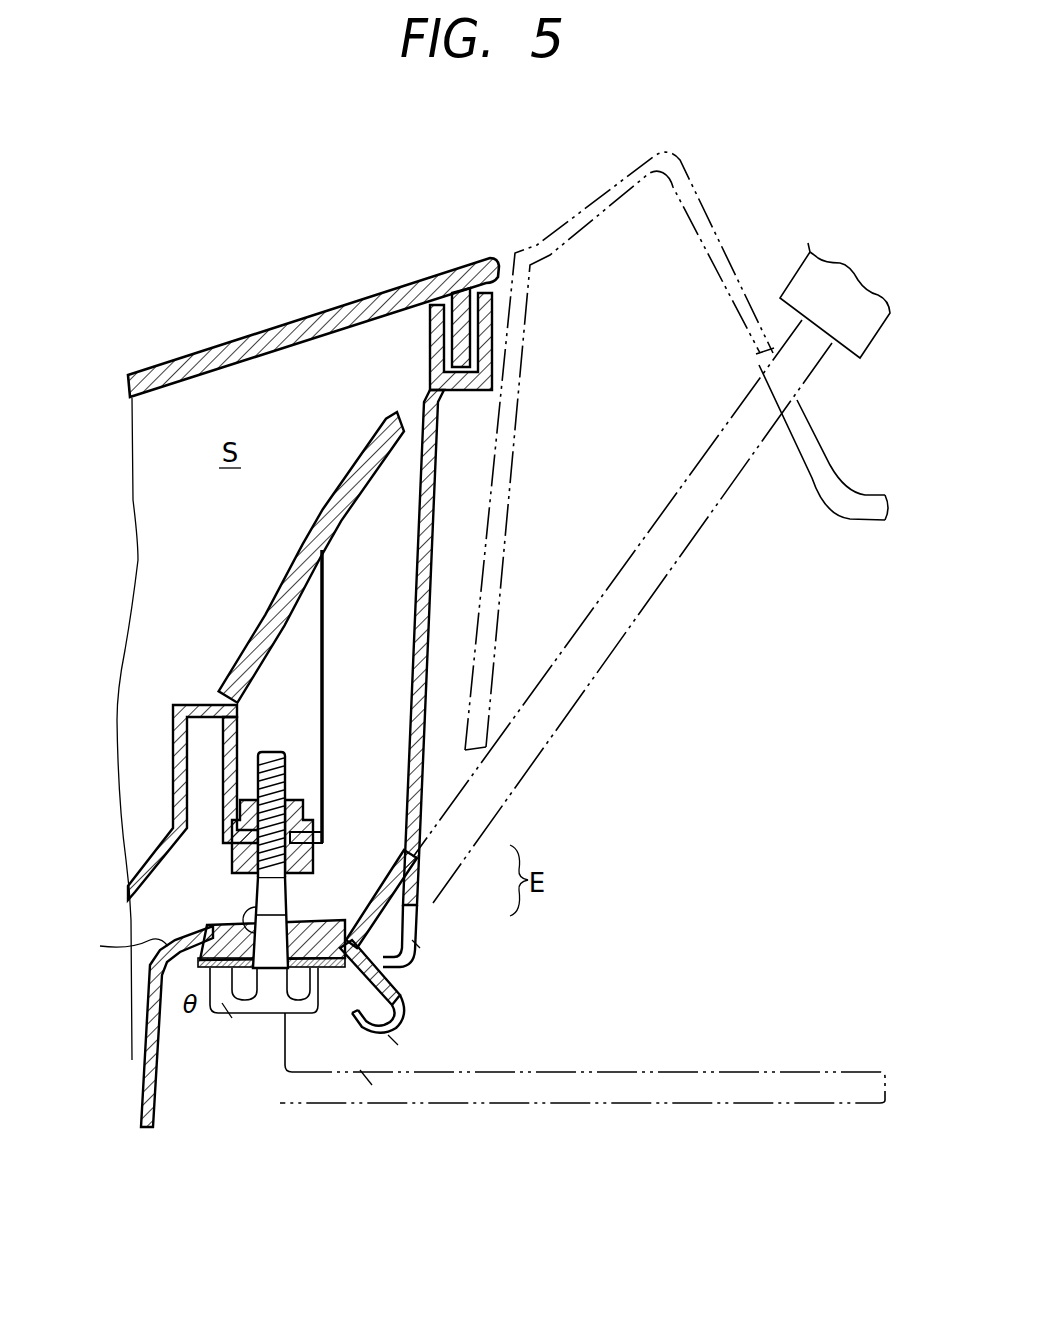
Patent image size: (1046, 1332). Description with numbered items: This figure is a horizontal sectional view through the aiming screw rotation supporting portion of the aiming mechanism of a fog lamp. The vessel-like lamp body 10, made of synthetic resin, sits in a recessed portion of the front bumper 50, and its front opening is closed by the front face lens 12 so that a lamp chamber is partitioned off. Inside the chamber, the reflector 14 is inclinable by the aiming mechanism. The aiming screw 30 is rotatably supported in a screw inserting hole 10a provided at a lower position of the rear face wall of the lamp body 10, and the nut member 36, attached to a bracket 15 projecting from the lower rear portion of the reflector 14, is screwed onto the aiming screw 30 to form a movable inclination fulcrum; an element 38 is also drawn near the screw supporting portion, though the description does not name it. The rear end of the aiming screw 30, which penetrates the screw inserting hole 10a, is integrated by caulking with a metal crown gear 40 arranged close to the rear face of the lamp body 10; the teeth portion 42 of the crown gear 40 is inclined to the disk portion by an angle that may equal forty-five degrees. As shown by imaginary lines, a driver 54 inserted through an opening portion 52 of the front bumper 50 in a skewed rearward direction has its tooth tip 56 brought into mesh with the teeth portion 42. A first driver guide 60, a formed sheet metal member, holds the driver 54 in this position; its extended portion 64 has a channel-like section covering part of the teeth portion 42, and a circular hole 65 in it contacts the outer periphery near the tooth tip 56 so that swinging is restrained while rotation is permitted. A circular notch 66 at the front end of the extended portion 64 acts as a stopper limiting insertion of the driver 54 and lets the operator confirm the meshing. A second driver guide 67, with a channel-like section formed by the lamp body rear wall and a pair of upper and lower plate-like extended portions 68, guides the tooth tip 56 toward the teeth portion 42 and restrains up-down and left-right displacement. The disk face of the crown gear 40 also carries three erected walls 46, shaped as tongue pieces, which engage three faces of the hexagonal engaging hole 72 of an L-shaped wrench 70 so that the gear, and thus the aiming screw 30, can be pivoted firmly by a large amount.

The lamp body 10 is at (438, 592).
The screw inserting hole 10a is at (250, 908).
The front face lens 12 is at (258, 334).
The reflector 14 is at (175, 742).
The bracket 15 is at (305, 730).
The aiming screw 30 is at (297, 880).
The nut member 36 is at (300, 822).
The mounting plate 38 is at (245, 917).
The crown gear 40 is at (306, 1078).
The teeth portion 42 is at (195, 957).
The erected walls 46 is at (262, 1020).
The front bumper 50 is at (560, 205).
The opening portion 52 is at (805, 445).
The driver 54 is at (690, 558).
The tooth tip 56 is at (366, 1078).
The first driver guide 60 is at (408, 1018).
The extended portion 64 is at (393, 1040).
The circular hole 65 is at (408, 968).
The circular notch 66 is at (335, 1020).
The second driver guide 67 is at (422, 944).
The extended portions 68 is at (410, 952).
The L-shaped wrench 70 is at (556, 1103).
The hexagonal engaging hole 72 is at (235, 1020).